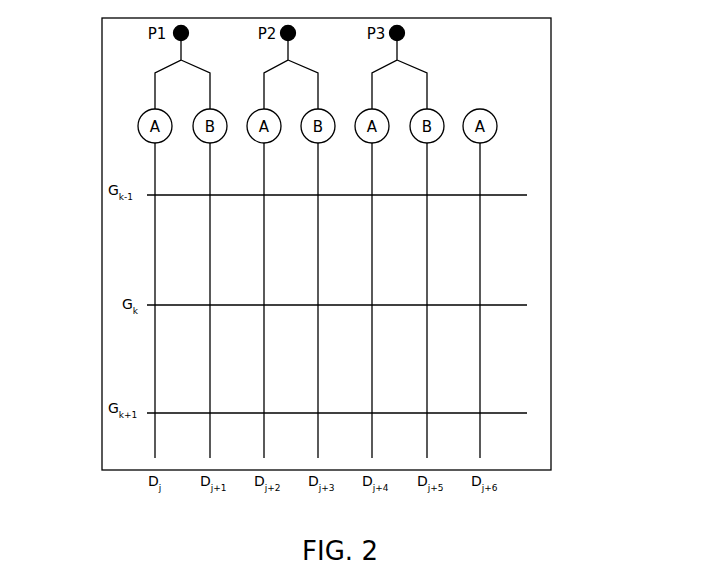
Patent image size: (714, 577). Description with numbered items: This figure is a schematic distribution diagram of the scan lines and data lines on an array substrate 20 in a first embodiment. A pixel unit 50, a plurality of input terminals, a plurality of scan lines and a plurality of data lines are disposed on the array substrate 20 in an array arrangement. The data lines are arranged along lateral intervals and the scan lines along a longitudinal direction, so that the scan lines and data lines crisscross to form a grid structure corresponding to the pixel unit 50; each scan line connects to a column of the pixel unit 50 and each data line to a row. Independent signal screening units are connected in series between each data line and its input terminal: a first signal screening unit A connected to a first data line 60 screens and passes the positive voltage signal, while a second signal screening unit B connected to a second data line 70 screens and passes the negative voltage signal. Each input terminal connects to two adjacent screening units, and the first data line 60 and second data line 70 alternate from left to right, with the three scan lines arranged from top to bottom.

The array substrate 20 is at (533, 132).
The pixel unit 50 is at (458, 255).
The first data line 60 is at (155, 232).
The second data line 70 is at (208, 343).